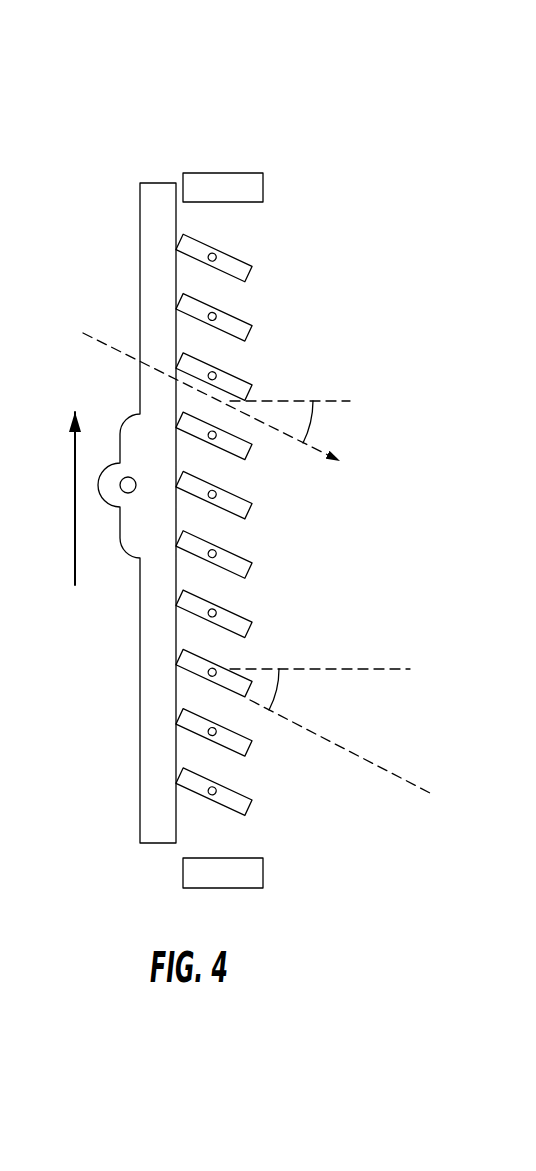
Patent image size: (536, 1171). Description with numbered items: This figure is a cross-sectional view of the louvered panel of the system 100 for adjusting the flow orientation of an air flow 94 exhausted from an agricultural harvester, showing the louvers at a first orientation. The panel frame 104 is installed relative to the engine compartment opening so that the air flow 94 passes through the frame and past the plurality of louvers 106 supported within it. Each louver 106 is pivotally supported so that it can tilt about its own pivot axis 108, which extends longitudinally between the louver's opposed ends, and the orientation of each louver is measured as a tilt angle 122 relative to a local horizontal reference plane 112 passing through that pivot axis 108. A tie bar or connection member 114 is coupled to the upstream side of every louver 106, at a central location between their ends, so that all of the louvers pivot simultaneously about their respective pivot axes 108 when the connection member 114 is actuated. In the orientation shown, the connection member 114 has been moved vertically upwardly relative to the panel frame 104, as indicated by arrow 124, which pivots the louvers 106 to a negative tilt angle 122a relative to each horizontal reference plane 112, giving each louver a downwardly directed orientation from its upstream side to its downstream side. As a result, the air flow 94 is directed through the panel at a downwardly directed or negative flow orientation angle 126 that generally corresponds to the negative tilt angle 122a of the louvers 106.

The system 100 is at (88, 125).
The panel frame 104 is at (193, 180).
The louvers 106 is at (243, 380).
The pivot axis 108 is at (232, 607).
The horizontal reference plane 112 is at (288, 395).
The connection member 114 is at (152, 805).
The tilt angle 122 is at (280, 693).
The negative tilt angle 122a is at (340, 746).
The arrow 124 is at (75, 532).
The negative flow orientation angle 126 is at (312, 417).
The air flow 94 is at (313, 449).